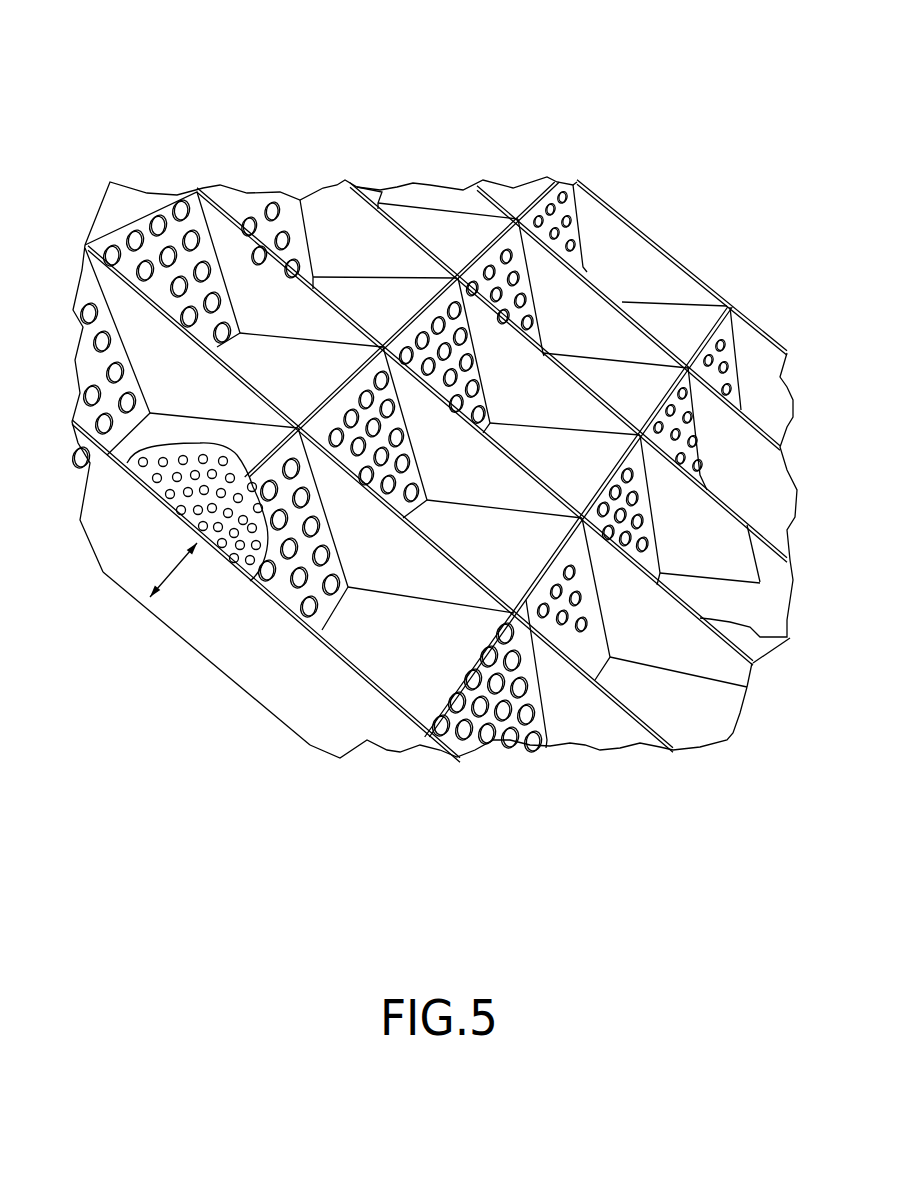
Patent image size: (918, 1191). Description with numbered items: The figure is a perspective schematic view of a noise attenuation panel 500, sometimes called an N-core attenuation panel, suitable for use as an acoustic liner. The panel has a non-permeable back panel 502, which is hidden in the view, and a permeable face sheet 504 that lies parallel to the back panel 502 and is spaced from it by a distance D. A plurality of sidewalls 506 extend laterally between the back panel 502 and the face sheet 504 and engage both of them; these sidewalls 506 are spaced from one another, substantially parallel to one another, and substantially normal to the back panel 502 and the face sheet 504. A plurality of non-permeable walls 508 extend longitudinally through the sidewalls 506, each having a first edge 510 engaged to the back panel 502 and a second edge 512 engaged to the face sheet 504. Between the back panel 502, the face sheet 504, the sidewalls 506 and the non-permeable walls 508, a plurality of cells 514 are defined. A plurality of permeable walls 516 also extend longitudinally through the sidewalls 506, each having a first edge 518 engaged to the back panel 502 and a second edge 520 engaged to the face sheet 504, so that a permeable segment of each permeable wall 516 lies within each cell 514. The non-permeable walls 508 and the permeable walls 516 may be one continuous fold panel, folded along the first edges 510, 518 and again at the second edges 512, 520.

The noise attenuation panel 500 is at (88, 100).
The non-permeable back panel 502 is at (103, 572).
The permeable face sheet 504 is at (128, 464).
The plurality of sidewalls 506 is at (760, 582).
The plurality of non-permeable walls 508 is at (688, 312).
The first edge 510 is at (320, 632).
The second edge 512 is at (437, 727).
The plurality of cells 514 is at (571, 282).
The plurality of permeable walls 516 is at (370, 432).
The first edge 518 is at (603, 672).
The second edge 520 is at (533, 653).
The distance D is at (170, 568).